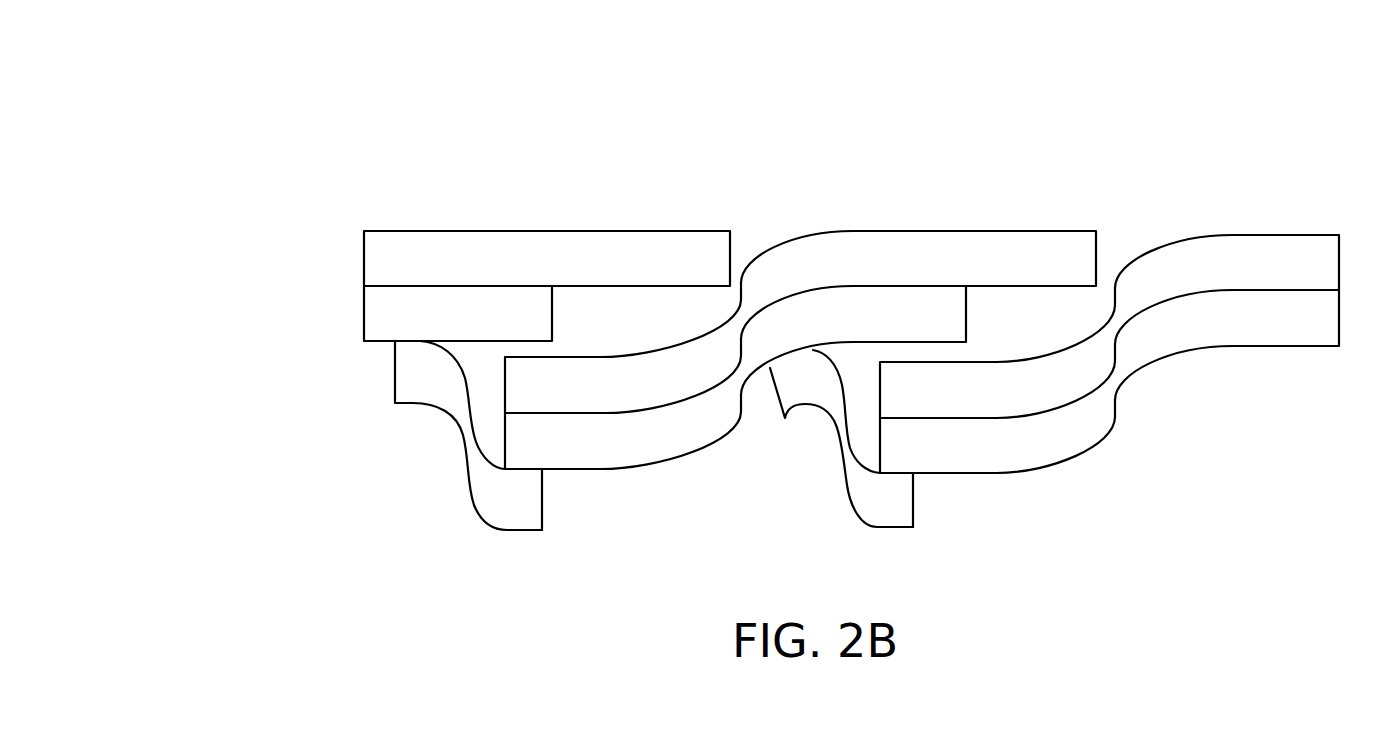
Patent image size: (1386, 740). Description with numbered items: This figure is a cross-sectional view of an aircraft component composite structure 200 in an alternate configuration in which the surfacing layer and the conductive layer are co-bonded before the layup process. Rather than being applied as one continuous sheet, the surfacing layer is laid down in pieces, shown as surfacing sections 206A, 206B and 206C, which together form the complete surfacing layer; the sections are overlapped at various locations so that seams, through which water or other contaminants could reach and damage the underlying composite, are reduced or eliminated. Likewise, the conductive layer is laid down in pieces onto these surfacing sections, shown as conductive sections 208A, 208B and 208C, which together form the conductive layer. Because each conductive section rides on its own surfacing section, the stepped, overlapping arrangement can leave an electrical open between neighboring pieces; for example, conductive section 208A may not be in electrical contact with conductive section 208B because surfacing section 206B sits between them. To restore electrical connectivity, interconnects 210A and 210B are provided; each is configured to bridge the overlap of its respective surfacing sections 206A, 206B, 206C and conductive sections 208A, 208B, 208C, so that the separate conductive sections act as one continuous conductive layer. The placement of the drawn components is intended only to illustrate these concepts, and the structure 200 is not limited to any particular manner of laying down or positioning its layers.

The aircraft component composite structure 200 is at (347, 84).
The surfacing section 206A is at (547, 258).
The surfacing section 206B is at (848, 322).
The surfacing section 206C is at (1168, 326).
The conductive section 208A is at (458, 313).
The conductive section 208B is at (783, 377).
The conductive section 208C is at (1168, 381).
The interconnect 210A is at (413, 405).
The interconnect 210B is at (843, 477).